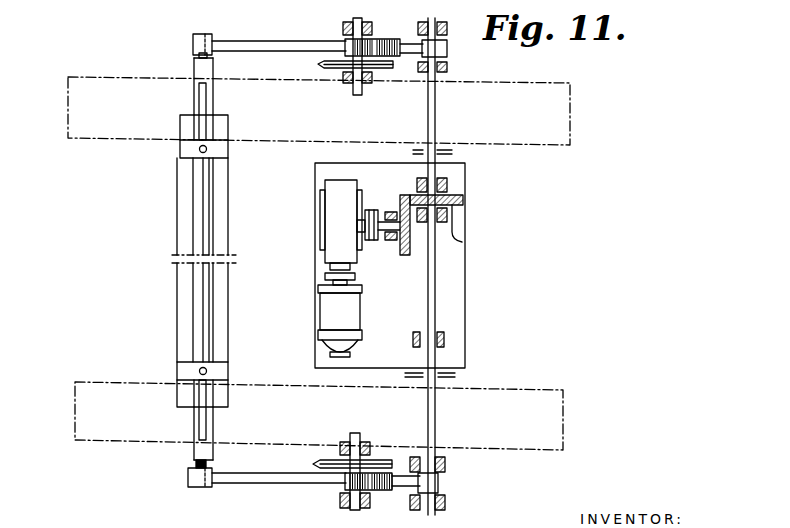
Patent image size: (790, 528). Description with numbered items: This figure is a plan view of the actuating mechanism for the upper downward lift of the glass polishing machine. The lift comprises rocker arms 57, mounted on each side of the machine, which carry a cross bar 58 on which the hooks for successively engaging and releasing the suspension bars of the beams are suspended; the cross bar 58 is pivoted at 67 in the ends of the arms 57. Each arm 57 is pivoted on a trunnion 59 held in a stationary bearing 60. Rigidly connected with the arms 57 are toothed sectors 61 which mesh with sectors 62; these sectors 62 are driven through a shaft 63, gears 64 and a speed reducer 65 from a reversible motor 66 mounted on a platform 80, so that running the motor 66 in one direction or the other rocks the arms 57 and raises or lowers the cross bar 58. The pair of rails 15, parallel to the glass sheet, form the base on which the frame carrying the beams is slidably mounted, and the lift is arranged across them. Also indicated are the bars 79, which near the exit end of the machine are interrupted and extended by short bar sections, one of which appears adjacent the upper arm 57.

The rails 15 is at (507, 140).
The rocker arms 57 is at (275, 36).
The cross bar 58 is at (180, 195).
The trunnions 59 is at (358, 20).
The stationary bearings 60 is at (373, 40).
The toothed sectors 61 is at (376, 57).
The sectors 62 is at (397, 56).
The shaft 63 is at (436, 105).
The gears 64 is at (452, 238).
The speed reducer 65 is at (335, 190).
The reversible motor 66 is at (330, 310).
The pivot 67 is at (193, 50).
The bars 79 is at (258, 0).
The platform 80 is at (465, 300).